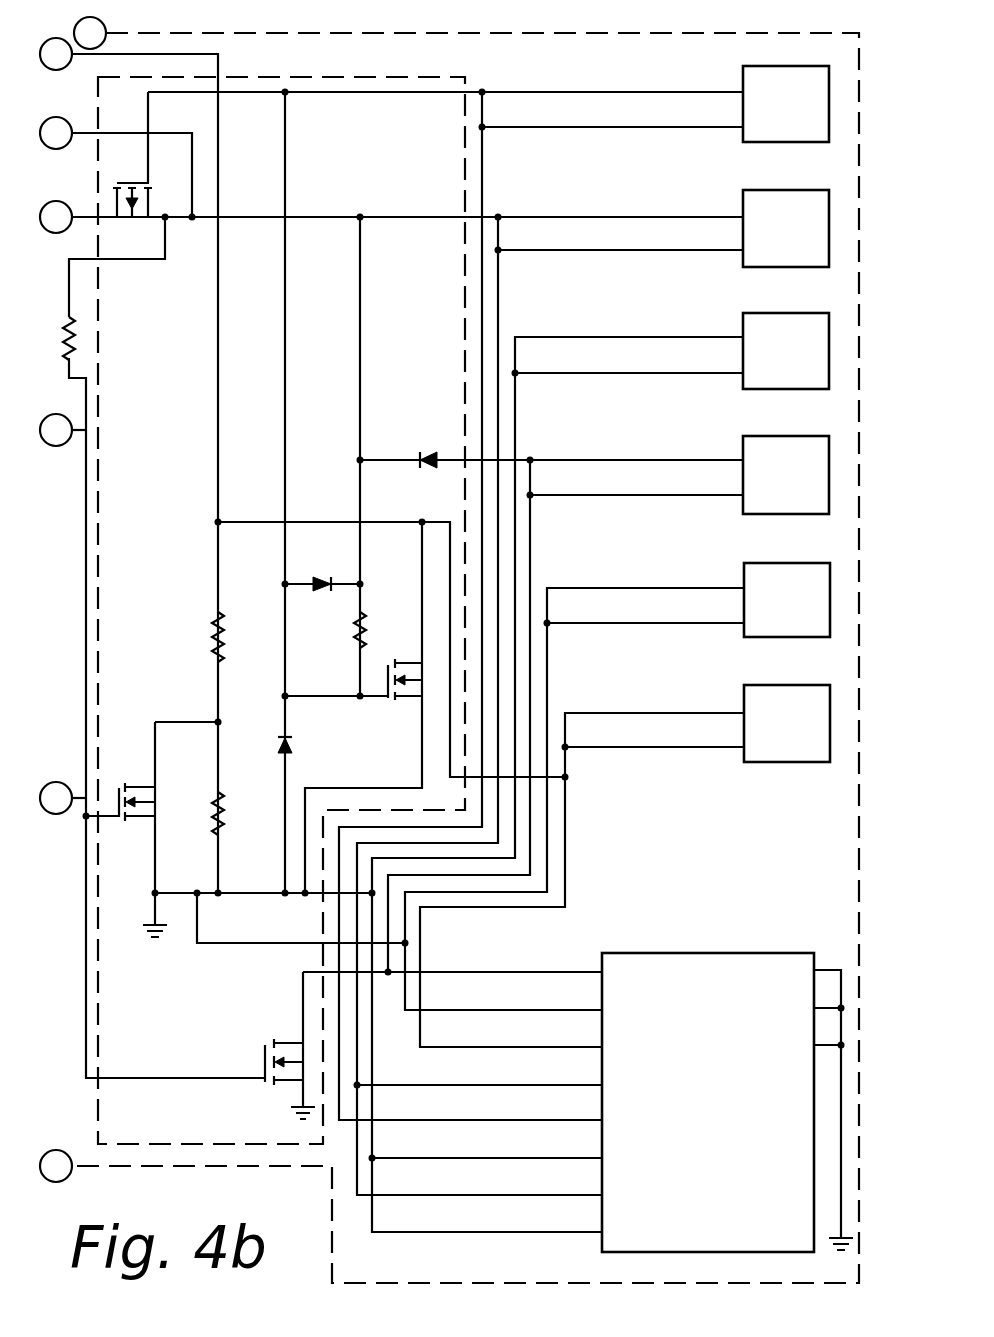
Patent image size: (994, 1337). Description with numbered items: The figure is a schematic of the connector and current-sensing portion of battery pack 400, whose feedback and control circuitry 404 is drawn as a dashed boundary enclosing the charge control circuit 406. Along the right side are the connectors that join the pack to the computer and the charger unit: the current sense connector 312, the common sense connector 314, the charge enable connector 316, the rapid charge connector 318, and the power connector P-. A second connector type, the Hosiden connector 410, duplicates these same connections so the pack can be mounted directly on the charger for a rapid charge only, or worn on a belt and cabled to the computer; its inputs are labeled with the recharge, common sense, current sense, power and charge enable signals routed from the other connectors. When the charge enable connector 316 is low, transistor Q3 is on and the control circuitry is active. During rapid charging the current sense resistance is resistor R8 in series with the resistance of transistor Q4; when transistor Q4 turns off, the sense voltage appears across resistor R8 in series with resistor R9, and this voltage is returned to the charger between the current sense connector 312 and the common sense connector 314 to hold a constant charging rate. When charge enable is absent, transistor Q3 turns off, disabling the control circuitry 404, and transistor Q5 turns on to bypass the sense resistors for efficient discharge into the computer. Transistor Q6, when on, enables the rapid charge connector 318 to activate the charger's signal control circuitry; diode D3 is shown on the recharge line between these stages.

The battery pack 400 is at (220, 16).
The feedback and control circuitry 404 is at (766, 34).
The charge control circuit 406 is at (476, 79).
The charge enable connector 316 is at (742, 70).
The rapid charge connector 318 is at (745, 436).
The common sense connector 314 is at (747, 563).
The current sense connector 312 is at (746, 686).
The Hosiden connector 410 is at (683, 953).
The transistor Q3 is at (129, 154).
The transistor Q4 is at (140, 796).
The transistor Q5 is at (353, 665).
The transistor Q6 is at (263, 1062).
The resistor R8 is at (200, 637).
The resistor R9 is at (224, 814).
The diode D3 is at (444, 434).
The connector P- is at (744, 313).